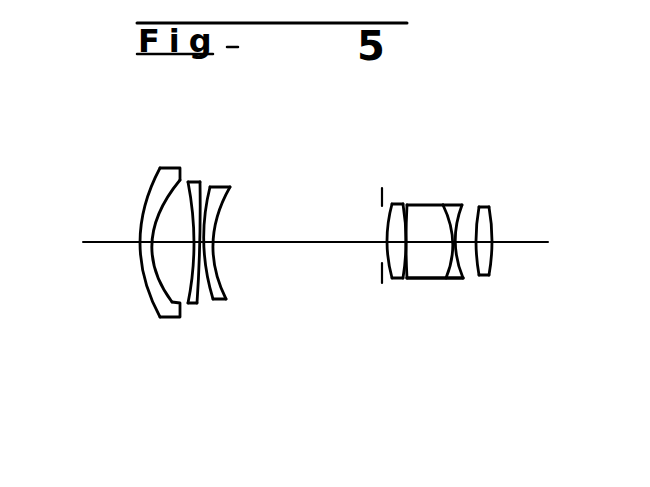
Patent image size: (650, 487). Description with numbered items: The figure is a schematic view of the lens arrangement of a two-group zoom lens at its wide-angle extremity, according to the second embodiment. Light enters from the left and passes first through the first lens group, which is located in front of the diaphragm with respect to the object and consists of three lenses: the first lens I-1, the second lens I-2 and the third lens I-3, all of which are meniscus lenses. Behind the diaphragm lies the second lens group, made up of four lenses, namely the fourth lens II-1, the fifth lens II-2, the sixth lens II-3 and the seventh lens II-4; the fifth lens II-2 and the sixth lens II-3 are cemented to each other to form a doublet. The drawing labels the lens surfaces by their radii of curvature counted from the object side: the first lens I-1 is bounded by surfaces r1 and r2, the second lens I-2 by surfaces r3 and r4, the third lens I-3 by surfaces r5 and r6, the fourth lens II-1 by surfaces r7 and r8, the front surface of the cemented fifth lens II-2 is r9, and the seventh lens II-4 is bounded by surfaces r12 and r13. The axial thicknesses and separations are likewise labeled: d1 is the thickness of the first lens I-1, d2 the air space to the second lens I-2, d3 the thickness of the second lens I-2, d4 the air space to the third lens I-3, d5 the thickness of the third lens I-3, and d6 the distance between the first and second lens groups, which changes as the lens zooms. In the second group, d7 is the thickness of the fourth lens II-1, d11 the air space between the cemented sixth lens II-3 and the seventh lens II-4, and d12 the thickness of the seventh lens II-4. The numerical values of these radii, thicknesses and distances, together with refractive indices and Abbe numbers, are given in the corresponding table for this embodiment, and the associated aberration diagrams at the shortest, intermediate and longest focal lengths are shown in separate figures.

The radius of curvature r1 is at (146, 222).
The radius of curvature r2 is at (168, 195).
The radius of curvature r3 is at (186, 210).
The radius of curvature r4 is at (202, 198).
The radius of curvature r5 is at (211, 193).
The radius of curvature r6 is at (226, 204).
The radius of curvature r7 is at (388, 226).
The radius of curvature r8 is at (406, 205).
The radius of curvature r9 is at (408, 206).
The radius of curvature r12 is at (473, 207).
The radius of curvature r13 is at (490, 221).
The lens thickness d1 is at (149, 243).
The distance between the lenses d2 is at (174, 245).
The lens thickness d3 is at (186, 266).
The distance between the lenses d4 is at (206, 258).
The lens thickness d5 is at (217, 253).
The distance between the lenses d6 is at (312, 244).
The lens thickness d7 is at (396, 247).
The distance between the lenses d11 is at (484, 254).
The lens thickness d12 is at (480, 251).
The first lens I-1 is at (133, 259).
The second lens I-2 is at (208, 247).
The third lens I-3 is at (255, 252).
The fourth lens II-1 is at (382, 260).
The fifth lens II-2 is at (439, 244).
The sixth lens II-3 is at (457, 281).
The seventh lens II-4 is at (529, 251).